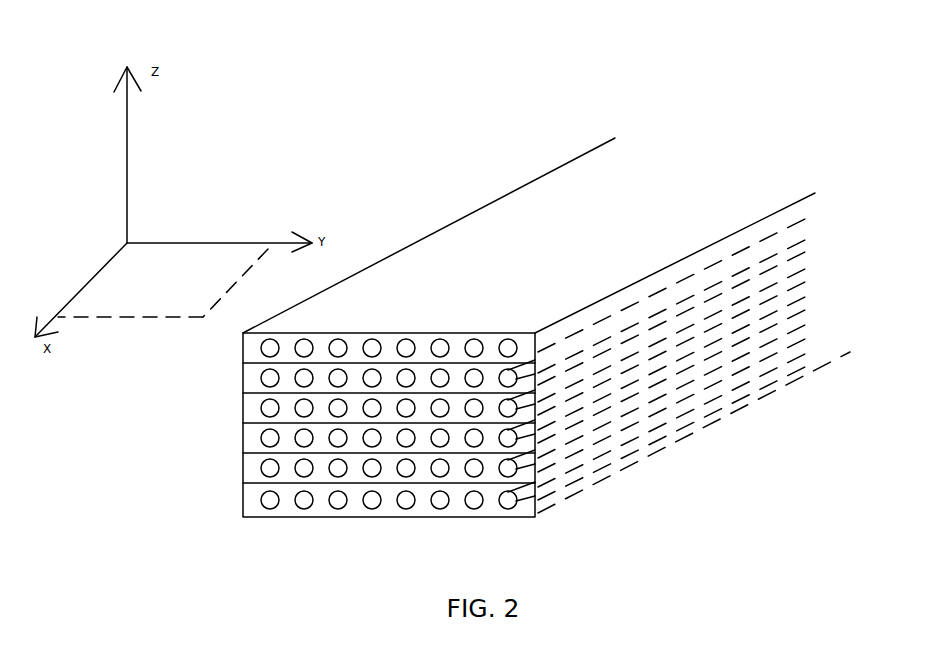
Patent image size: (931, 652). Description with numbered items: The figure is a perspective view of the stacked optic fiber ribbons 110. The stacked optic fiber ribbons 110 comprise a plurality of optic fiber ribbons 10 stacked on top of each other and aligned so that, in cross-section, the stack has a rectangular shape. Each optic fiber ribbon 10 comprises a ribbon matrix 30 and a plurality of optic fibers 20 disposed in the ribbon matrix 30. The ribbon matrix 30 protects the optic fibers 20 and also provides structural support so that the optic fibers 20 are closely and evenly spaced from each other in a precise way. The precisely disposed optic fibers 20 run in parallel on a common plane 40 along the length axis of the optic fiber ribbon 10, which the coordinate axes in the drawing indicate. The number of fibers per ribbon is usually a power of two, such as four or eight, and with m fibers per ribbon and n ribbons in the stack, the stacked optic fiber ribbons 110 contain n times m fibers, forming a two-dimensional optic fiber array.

The stacked optic fiber ribbons 110 is at (48, 27).
The optic fiber ribbon 10 is at (257, 465).
The optic fibers 20 is at (267, 376).
The ribbon matrix 30 is at (533, 508).
The common plane 40 is at (163, 278).